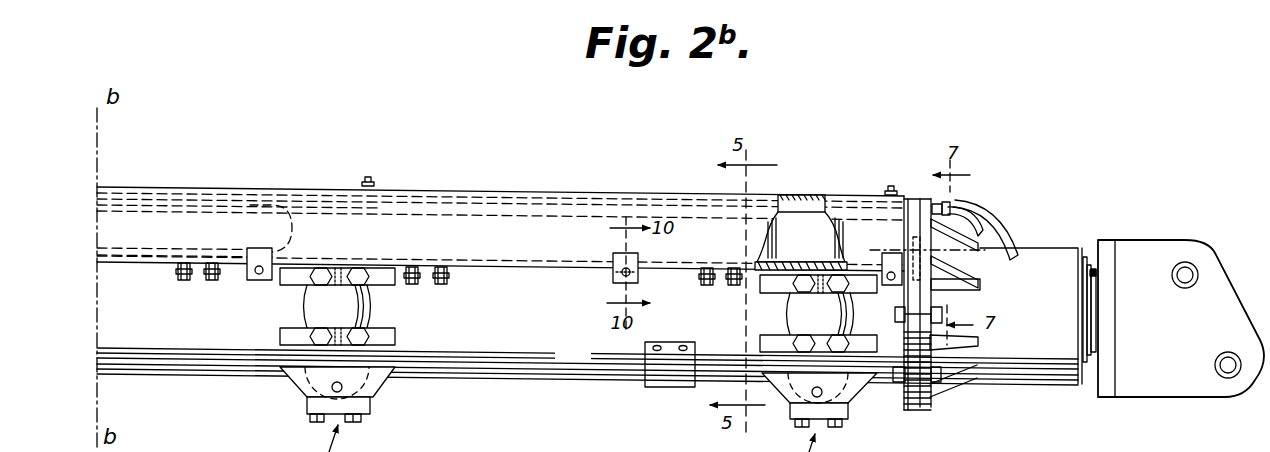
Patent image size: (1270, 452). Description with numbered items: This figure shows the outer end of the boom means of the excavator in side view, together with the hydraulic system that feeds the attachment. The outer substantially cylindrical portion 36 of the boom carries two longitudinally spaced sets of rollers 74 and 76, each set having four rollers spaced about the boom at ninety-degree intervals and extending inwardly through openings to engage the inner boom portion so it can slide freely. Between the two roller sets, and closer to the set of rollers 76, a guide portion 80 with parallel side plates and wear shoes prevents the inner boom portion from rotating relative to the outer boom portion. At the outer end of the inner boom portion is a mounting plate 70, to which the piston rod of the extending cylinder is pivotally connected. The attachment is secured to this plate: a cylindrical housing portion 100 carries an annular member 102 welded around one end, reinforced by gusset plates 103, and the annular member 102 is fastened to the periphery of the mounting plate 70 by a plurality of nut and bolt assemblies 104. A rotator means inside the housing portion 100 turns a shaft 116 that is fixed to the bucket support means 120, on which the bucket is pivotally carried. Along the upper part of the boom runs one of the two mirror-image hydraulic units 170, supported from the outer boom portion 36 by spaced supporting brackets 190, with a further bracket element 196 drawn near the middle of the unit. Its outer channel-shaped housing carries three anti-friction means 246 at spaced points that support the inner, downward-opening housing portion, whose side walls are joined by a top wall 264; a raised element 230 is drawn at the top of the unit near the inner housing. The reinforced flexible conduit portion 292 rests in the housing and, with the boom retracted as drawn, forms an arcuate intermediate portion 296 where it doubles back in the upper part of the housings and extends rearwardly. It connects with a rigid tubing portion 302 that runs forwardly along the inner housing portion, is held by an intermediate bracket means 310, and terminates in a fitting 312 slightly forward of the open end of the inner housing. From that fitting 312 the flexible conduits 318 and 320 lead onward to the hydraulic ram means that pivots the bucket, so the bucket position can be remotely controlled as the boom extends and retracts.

The hydraulic unit 170 is at (574, 184).
The intermediate bracket means 310 is at (314, 195).
The rigid tubing portion 302 is at (377, 213).
The flexible conduit portion 292 is at (152, 248).
The arcuate intermediate portion 296 is at (295, 236).
The outer substantially cylindrical portion 36 is at (587, 363).
The anti-friction means 246 is at (880, 288).
The supporting brackets 190 is at (490, 301).
The bolt 196 is at (698, 287).
The set of rollers 74 is at (379, 317).
The set of rollers 76 is at (781, 311).
The guide portion 80 is at (667, 392).
The bellows 230 is at (800, 195).
The top wall 264 is at (820, 200).
The mounting plate 70 is at (911, 411).
The annular member 102 is at (932, 411).
The fitting 312 is at (950, 205).
The flexible conduit 318 is at (980, 216).
The flexible conduit 320 is at (1004, 231).
The gusset plates 103 is at (972, 279).
The nut and bolt assemblies 104 is at (943, 306).
The cylindrical housing portion 100 is at (1015, 378).
The shaft 116 is at (1090, 268).
The bucket support means 120 is at (1166, 238).